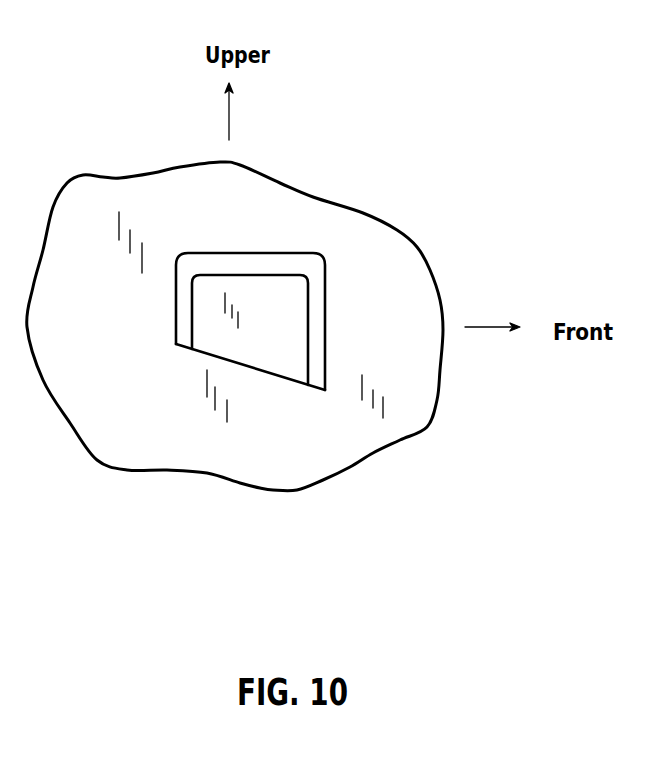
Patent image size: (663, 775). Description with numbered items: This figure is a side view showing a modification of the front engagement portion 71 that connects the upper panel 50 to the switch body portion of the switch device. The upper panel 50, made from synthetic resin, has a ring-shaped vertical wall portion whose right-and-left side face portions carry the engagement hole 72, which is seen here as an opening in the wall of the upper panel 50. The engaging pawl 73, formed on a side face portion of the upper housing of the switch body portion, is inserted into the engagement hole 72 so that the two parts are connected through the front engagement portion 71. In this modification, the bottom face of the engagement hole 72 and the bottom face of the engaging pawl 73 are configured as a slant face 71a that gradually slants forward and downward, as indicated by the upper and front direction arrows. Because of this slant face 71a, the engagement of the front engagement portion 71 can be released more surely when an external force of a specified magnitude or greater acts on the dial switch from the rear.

The upper panel 50 is at (253, 457).
The front engagement portion 71 is at (347, 313).
The engagement hole 72 is at (323, 326).
The engaging pawl 73 is at (268, 295).
The slant face 71a is at (250, 372).